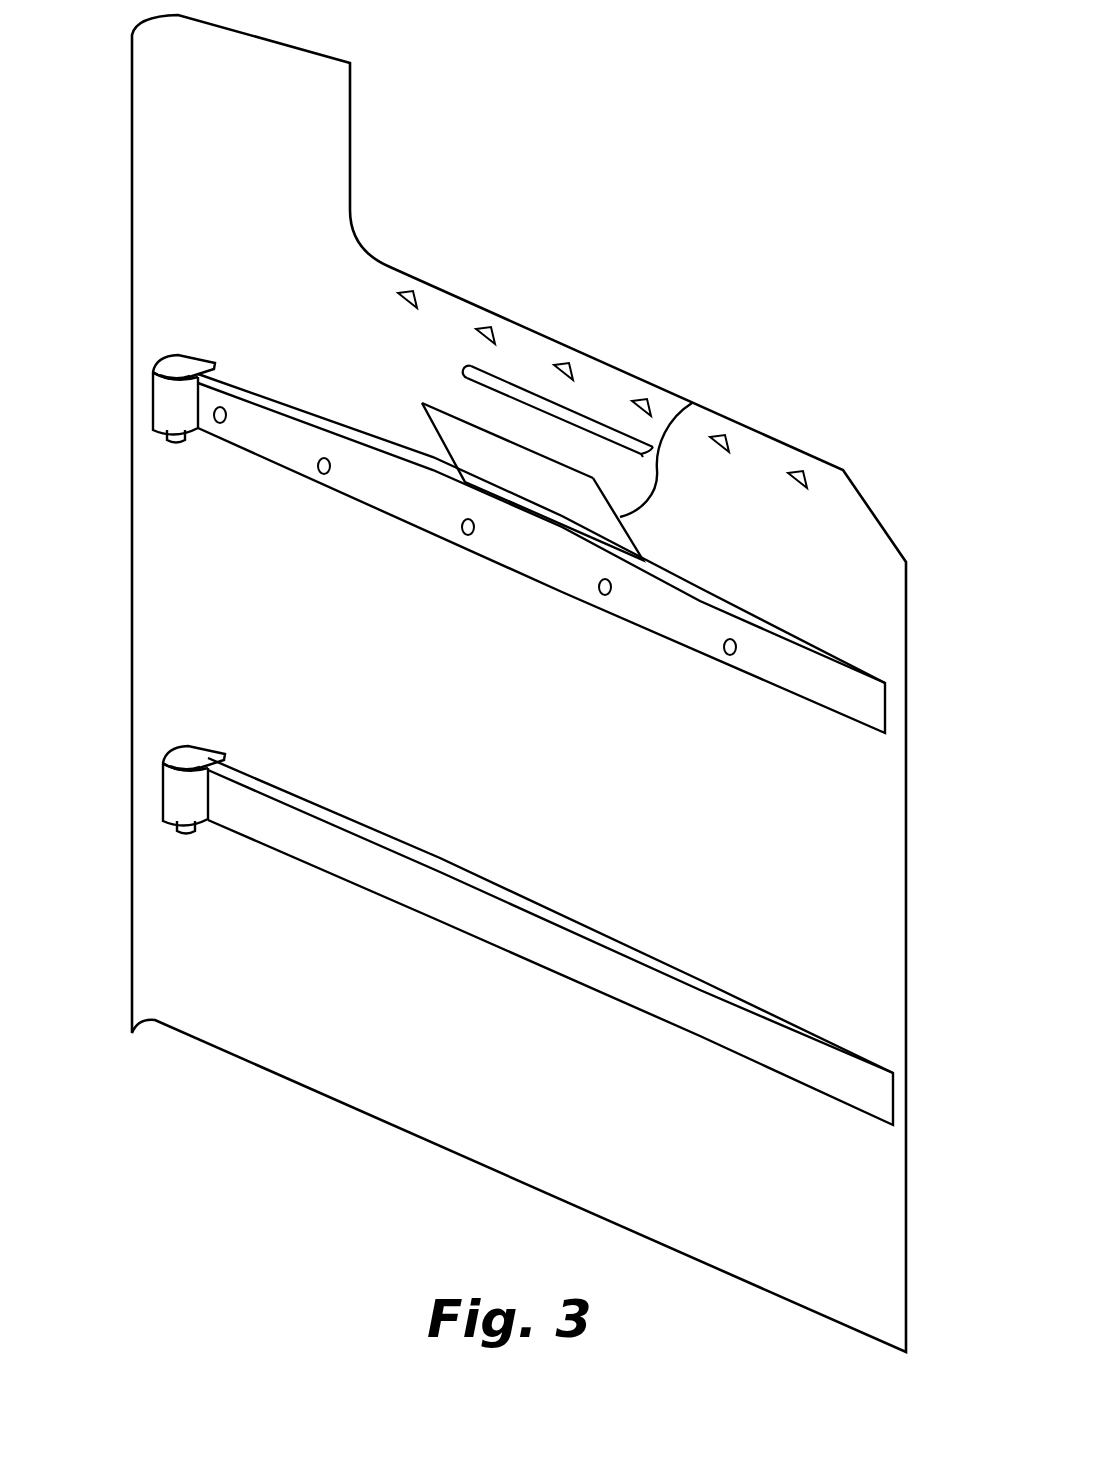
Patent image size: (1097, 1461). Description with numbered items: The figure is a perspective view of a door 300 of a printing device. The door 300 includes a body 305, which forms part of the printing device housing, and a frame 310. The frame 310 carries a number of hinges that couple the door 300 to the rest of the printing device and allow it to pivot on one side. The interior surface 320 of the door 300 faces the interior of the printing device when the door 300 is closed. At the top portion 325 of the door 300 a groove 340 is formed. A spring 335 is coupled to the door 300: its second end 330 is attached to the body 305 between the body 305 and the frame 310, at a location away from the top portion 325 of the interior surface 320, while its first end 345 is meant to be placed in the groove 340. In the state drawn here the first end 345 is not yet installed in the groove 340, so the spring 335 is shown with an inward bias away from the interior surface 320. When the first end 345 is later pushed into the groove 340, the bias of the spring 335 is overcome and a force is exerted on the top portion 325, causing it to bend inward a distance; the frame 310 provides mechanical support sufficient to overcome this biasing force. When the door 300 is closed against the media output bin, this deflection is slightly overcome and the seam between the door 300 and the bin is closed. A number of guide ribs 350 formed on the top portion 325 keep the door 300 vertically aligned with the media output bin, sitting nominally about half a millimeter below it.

The door 300 is at (697, 115).
The body 305 is at (263, 257).
The frame 310 is at (783, 668).
The interior surface 320 is at (280, 1107).
The top portion 325 is at (562, 333).
The second end 330 is at (463, 483).
The spring 335 is at (692, 403).
The groove 340 is at (588, 420).
The first end 345 is at (422, 403).
The guide ribs 350 is at (787, 473).